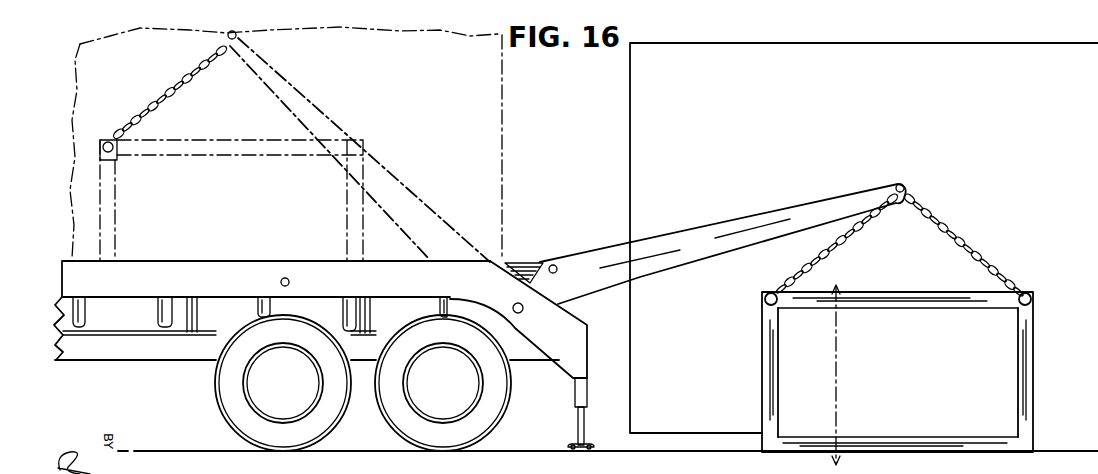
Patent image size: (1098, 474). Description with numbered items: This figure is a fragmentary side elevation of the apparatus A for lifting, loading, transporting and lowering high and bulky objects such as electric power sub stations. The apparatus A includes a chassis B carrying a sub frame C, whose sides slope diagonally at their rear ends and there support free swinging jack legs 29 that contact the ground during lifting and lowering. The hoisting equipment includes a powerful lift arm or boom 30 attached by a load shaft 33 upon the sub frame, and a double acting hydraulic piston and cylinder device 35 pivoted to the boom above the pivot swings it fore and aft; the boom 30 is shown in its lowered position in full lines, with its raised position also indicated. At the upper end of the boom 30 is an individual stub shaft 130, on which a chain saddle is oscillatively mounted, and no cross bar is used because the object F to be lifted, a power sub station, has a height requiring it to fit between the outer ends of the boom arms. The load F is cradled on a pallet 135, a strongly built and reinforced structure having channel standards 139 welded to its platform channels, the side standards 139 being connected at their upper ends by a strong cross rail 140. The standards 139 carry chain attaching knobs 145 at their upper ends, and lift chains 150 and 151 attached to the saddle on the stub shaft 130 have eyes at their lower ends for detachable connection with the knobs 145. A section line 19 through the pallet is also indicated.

The section line 19- 19 is at (825, 370).
The jack legs 29 is at (573, 403).
The lift arm or boom 30 is at (667, 262).
The load shaft 33 is at (523, 311).
The double acting hydraulic piston and cylinder device 35 is at (512, 268).
The stub shaft 130 is at (228, 38).
The pallet 135 is at (251, 133).
The channel standards 139 is at (772, 381).
The cross rail 140 is at (905, 318).
The chain attaching knobs 145 is at (764, 303).
The lift chain 150 is at (163, 94).
The lift chain 151 is at (966, 257).
The apparatus for lifting, loading, transporting and lowering heavy bulky articles A is at (246, 238).
The chassis B is at (97, 355).
The sub frame C is at (108, 274).
The object to be lifted F is at (506, 181).